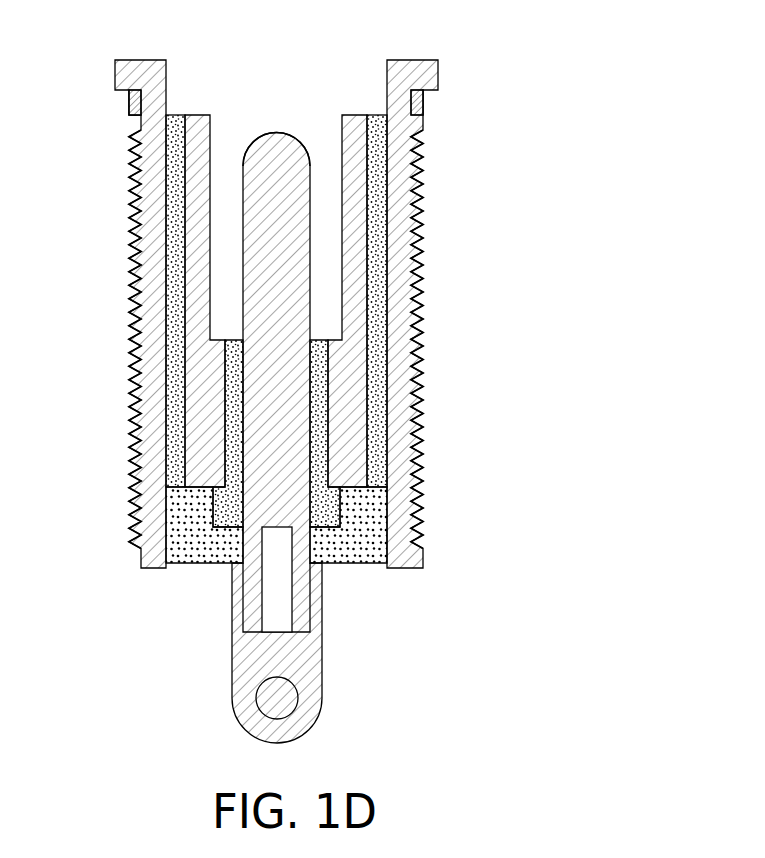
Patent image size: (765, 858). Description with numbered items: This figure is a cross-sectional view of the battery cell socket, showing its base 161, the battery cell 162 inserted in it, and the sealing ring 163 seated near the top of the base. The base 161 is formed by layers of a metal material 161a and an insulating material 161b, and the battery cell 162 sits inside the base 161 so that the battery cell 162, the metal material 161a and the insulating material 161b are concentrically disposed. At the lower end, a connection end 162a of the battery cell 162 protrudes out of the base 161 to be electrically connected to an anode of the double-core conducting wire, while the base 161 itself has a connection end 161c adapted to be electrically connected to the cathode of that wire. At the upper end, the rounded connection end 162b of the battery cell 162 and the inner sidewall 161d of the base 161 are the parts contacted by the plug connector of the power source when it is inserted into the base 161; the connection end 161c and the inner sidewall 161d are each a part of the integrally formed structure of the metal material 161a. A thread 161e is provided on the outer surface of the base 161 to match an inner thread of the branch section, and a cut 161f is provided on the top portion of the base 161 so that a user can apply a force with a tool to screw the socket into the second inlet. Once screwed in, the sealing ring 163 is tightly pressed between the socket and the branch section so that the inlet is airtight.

The base 161 is at (376, 392).
The metal material 161a is at (345, 465).
The insulating material 161b is at (317, 383).
The connection end 161c is at (247, 733).
The inner sidewall 161d is at (212, 133).
The thread 161e is at (131, 245).
The cut 161f is at (363, 95).
The battery cell 162 is at (367, 379).
The connection end 162a is at (298, 640).
The connection end 162b is at (277, 130).
The sealing ring 163 is at (133, 103).